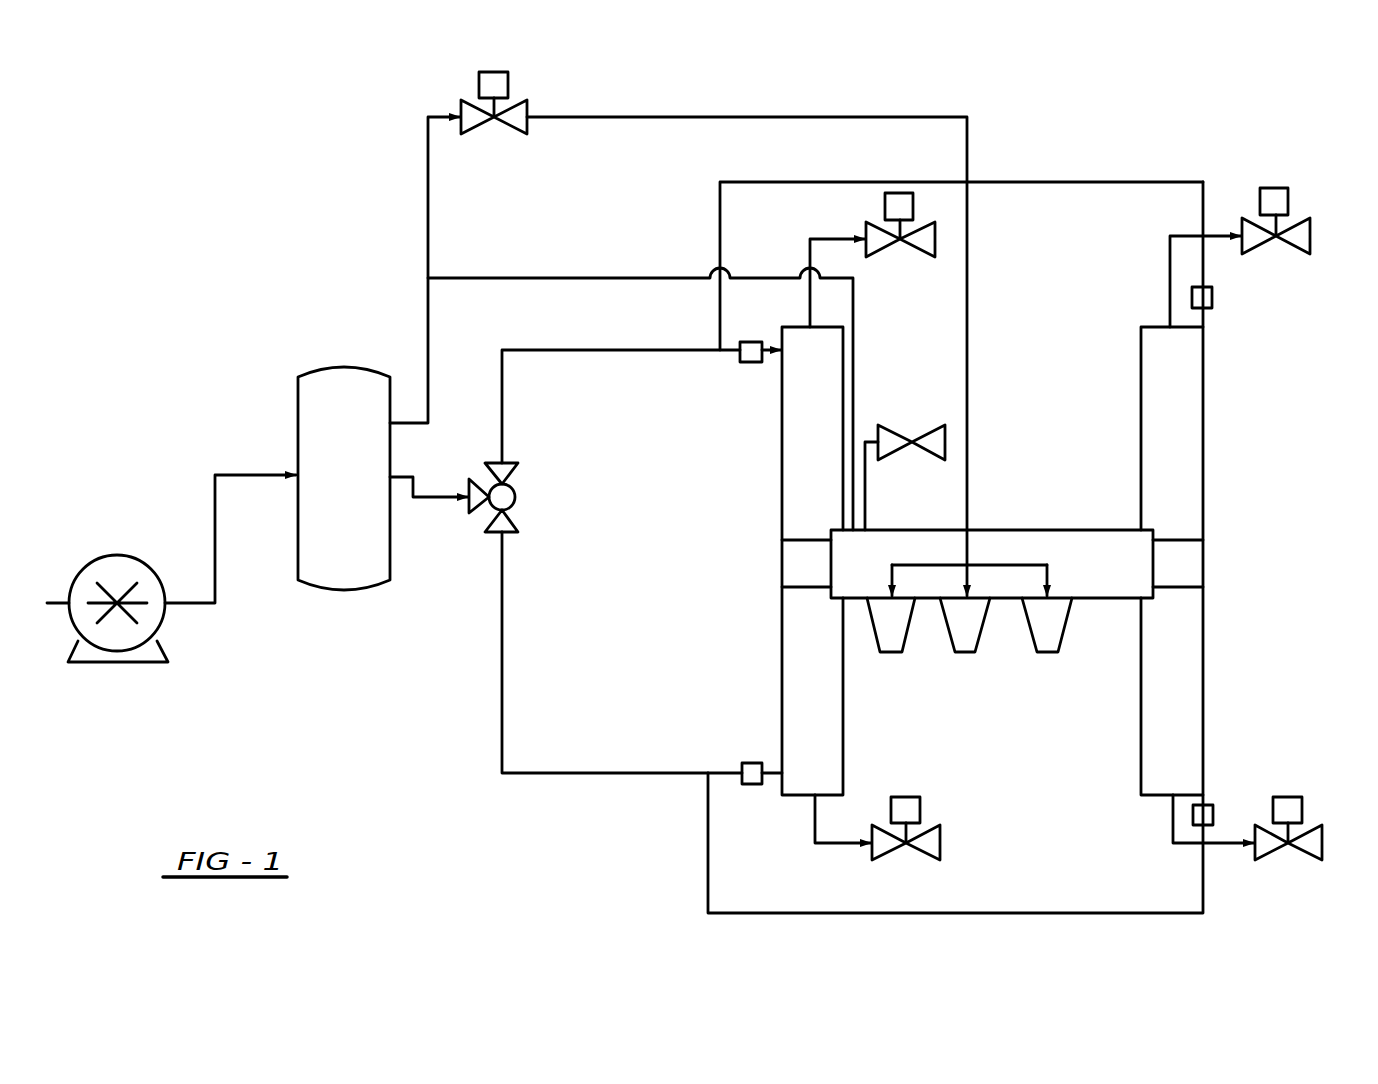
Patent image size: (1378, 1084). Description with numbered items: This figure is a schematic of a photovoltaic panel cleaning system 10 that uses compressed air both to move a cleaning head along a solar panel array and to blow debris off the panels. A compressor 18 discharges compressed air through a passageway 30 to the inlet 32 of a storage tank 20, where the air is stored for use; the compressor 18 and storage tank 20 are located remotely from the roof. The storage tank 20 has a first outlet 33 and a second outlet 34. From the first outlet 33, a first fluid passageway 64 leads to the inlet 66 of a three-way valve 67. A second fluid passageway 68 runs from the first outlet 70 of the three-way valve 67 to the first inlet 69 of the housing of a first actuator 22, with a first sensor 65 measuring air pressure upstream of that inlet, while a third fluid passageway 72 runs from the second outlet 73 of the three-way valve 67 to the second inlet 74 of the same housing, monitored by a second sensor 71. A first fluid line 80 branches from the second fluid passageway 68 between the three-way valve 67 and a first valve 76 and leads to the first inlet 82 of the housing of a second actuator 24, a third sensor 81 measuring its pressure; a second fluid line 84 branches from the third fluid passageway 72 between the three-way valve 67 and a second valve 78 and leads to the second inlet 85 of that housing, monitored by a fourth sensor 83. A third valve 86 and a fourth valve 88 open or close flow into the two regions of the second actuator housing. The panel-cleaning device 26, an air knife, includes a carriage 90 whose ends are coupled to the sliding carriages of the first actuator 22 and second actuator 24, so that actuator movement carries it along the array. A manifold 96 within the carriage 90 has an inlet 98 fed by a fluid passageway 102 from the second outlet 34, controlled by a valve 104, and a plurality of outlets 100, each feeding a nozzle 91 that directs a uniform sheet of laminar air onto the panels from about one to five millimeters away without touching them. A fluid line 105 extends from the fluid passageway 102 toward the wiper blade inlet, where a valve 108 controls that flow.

The panel cleaning system 10 is at (1158, 90).
The compressor 18 is at (102, 553).
The storage tank 20 is at (327, 365).
The first actuator 22 is at (785, 797).
The second actuator 24 is at (1210, 648).
The panel-cleaning device 26 is at (1043, 528).
The passageway 30 is at (232, 475).
The inlet 32 is at (294, 480).
The first outlet 33 is at (392, 478).
The second outlet 34 is at (390, 420).
The first fluid passageway 64 is at (430, 498).
The first sensor 65 is at (748, 342).
The inlet 66 is at (467, 493).
The 3-way valve 67 is at (534, 488).
The second fluid passageway 68 is at (592, 350).
The first inlet 69 is at (780, 352).
The first outlet 70 is at (503, 462).
The second sensor 71 is at (747, 763).
The third fluid passageway 72 is at (562, 773).
The second outlet 73 is at (507, 532).
The second inlet 74 is at (778, 768).
The first valve 76 is at (918, 252).
The second valve 78 is at (923, 852).
The first fluid line 80 is at (720, 182).
The third sensor 81 is at (1212, 297).
The first inlet 82 is at (1203, 327).
The fourth sensor 83 is at (1217, 815).
The second fluid line 84 is at (1085, 914).
The second inlet 85 is at (1203, 795).
The third valve 86 is at (1302, 252).
The fourth valve 88 is at (1307, 858).
The carriage 90 is at (995, 528).
The nozzles 91 is at (960, 632).
The manifold 96 is at (1030, 565).
The inlet 98 is at (967, 565).
The outlets 100 is at (890, 565).
The fluid passageway 102 is at (670, 117).
The valve 104 is at (526, 100).
The fluid line 105 is at (853, 410).
The valve 108 is at (933, 455).